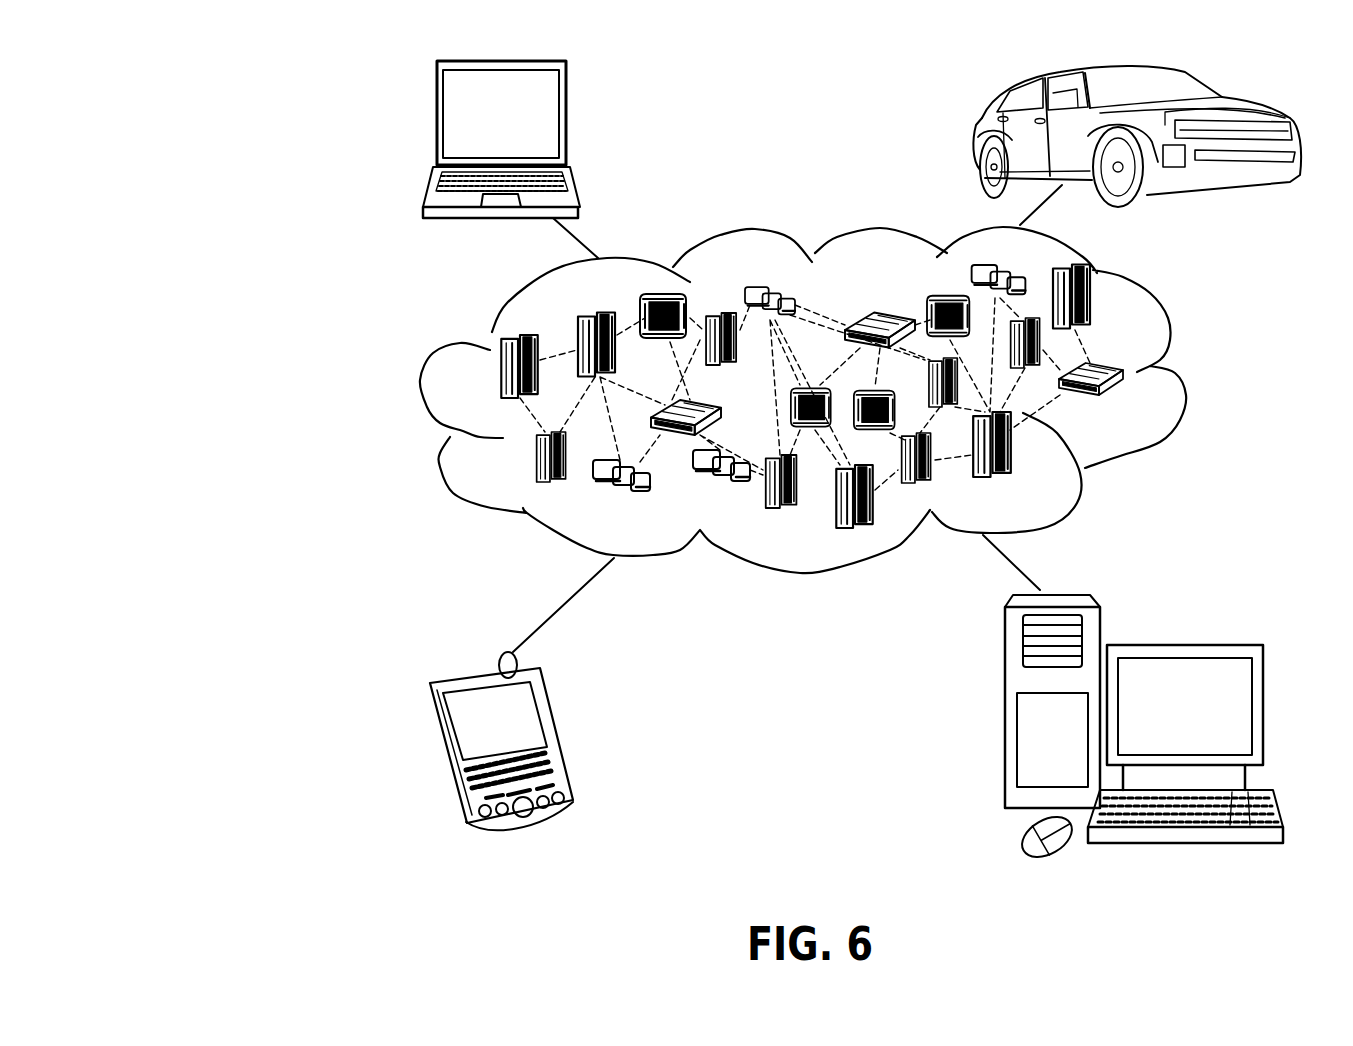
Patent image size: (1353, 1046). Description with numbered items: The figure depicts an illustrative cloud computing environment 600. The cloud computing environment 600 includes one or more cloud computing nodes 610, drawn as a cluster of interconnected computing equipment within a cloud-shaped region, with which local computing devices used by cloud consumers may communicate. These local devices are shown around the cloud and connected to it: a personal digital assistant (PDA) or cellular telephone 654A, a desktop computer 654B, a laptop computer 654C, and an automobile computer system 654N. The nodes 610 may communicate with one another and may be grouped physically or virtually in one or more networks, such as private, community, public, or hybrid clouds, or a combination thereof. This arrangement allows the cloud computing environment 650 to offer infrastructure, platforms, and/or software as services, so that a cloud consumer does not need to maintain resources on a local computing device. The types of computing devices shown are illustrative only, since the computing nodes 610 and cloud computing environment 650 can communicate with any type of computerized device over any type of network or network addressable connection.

The cloud computing environment 600 is at (278, 82).
The laptop computer 654C is at (566, 122).
The automobile computer system 654N is at (978, 137).
The cloud computing environment 650 is at (1180, 376).
The cloud computing nodes 610 is at (1136, 411).
The personal digital assistant (PDA) or cellular telephone 654A is at (557, 733).
The desktop computer 654B is at (1182, 643).